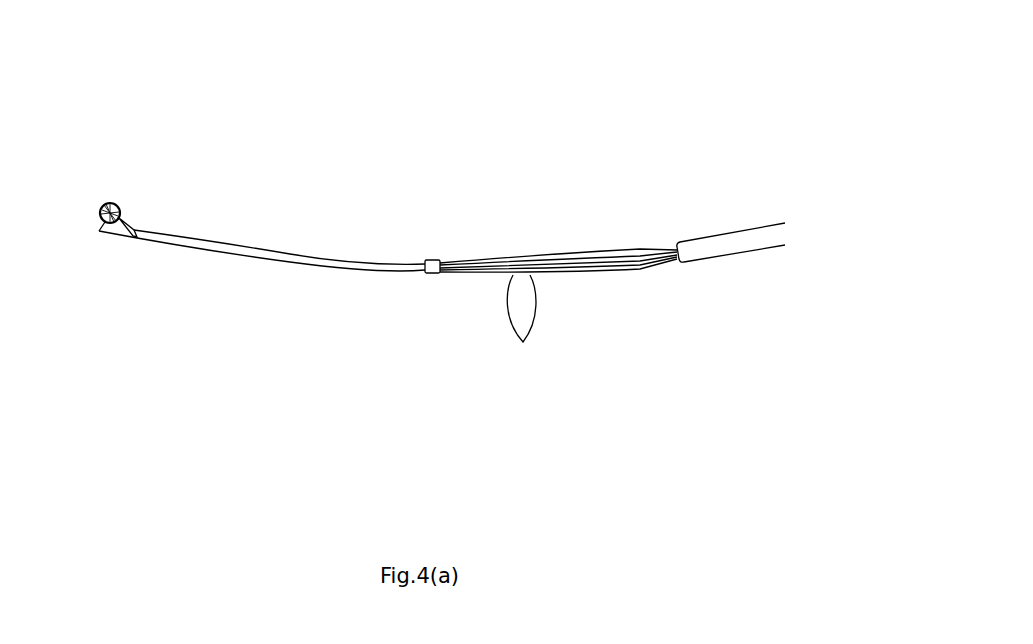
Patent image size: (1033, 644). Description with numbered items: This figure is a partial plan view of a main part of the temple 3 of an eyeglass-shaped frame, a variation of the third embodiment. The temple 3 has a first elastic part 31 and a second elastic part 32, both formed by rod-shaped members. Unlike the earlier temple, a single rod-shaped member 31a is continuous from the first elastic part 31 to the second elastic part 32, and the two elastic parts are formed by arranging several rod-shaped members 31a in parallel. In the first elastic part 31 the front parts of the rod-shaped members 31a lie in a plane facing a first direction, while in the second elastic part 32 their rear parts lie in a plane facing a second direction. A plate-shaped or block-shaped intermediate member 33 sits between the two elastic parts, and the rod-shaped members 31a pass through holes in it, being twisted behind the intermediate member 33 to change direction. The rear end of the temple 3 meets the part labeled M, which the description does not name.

The temple 3 is at (442, 268).
The first elastic part 31 is at (223, 238).
The rod-shaped member 31a is at (527, 322).
The second elastic part 32 is at (558, 241).
The intermediate member 33 is at (433, 273).
The connector M is at (762, 238).